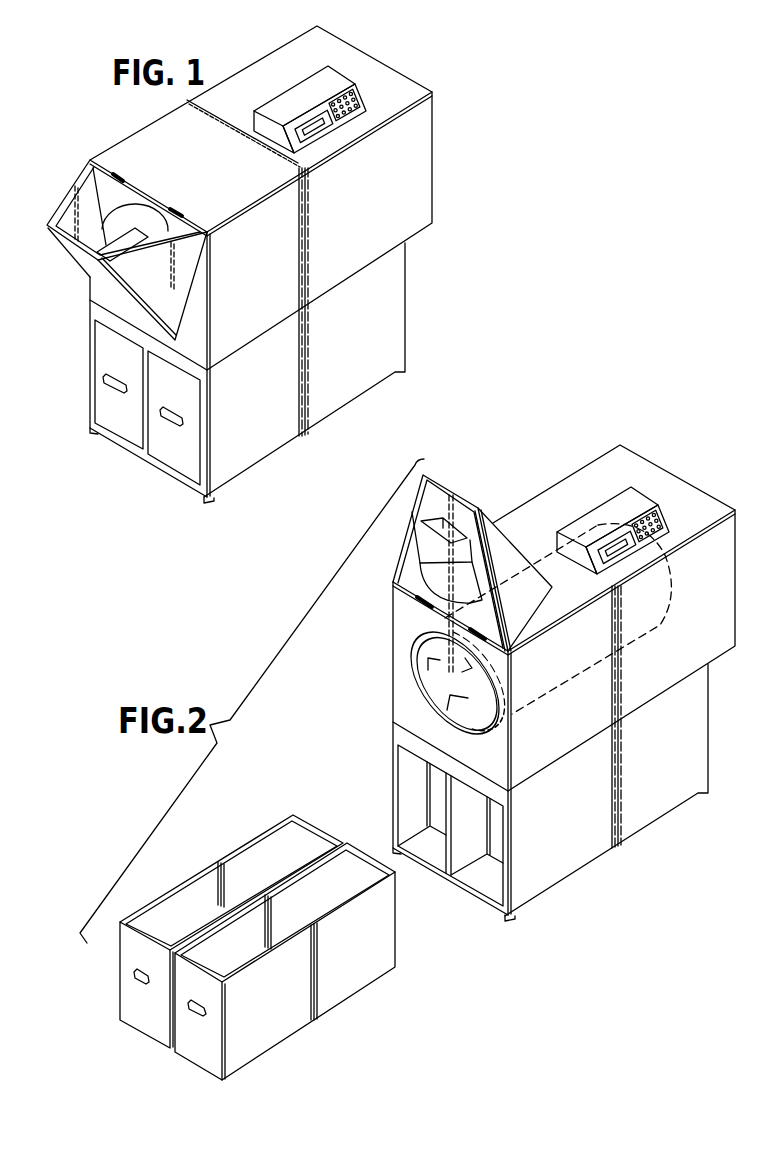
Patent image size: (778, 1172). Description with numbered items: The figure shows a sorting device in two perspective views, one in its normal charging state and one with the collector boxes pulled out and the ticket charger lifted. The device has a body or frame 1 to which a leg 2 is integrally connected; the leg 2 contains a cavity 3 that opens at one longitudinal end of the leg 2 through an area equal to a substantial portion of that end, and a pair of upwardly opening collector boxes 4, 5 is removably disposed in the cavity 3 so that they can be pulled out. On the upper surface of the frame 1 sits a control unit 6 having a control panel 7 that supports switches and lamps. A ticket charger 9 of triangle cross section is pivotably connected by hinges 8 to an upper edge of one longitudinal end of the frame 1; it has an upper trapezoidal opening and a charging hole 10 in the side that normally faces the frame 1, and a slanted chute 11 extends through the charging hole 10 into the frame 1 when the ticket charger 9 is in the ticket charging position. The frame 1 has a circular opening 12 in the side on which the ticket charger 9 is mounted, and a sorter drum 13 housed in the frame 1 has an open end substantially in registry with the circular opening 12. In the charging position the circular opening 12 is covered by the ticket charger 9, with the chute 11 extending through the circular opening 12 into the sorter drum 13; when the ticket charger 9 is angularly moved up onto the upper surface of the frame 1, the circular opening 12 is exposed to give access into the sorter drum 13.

In FIG. 1, the frame 1 is at (360, 53).
In FIG. 2, the frame 1 is at (664, 473).
In FIG. 1, the leg 2 is at (403, 313).
In FIG. 2, the leg 2 is at (707, 738).
In FIG. 1, the cavity 3 is at (103, 326).
In FIG. 2, the cavity 3 is at (474, 796).
In FIG. 1, the collector box 4 is at (172, 464).
In FIG. 2, the collector box 4 is at (200, 1063).
In FIG. 1, the collector box 5 is at (117, 433).
In FIG. 2, the collector box 5 is at (138, 1024).
In FIG. 1, the control unit 6 is at (292, 96).
In FIG. 2, the control unit 6 is at (602, 511).
In FIG. 1, the control panel 7 is at (358, 97).
In FIG. 2, the control panel 7 is at (658, 521).
In FIG. 1, the hinges 8 is at (116, 178).
In FIG. 2, the hinges 8 is at (420, 601).
In FIG. 1, the ticket charger 9 is at (70, 206).
In FIG. 2, the ticket charger 9 is at (443, 494).
In FIG. 1, the charging hole 10 is at (140, 213).
In FIG. 2, the charging hole 10 is at (476, 578).
In FIG. 1, the slanted chute 11 is at (137, 238).
In FIG. 2, the slanted chute 11 is at (441, 541).
In FIG. 2, the circular opening 12 is at (431, 705).
In FIG. 2, the sorter drum 13 is at (479, 738).